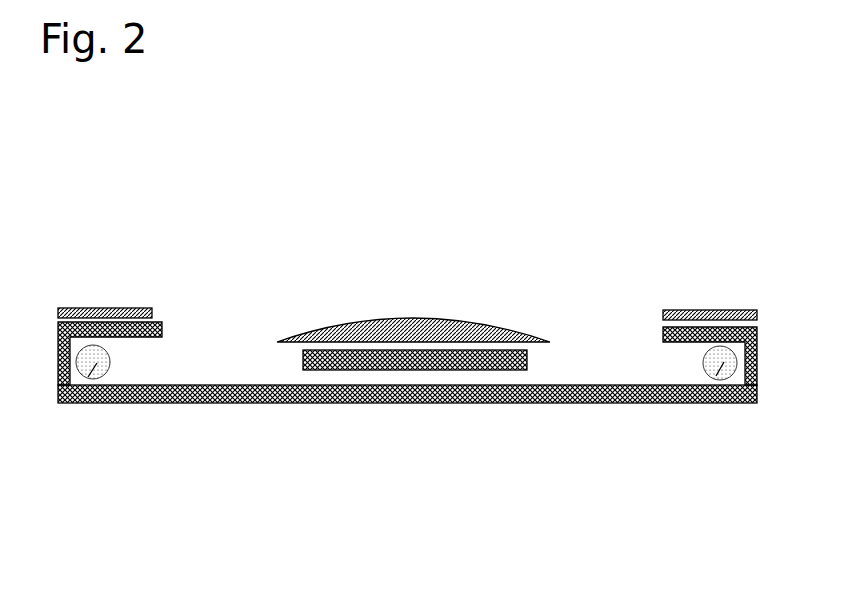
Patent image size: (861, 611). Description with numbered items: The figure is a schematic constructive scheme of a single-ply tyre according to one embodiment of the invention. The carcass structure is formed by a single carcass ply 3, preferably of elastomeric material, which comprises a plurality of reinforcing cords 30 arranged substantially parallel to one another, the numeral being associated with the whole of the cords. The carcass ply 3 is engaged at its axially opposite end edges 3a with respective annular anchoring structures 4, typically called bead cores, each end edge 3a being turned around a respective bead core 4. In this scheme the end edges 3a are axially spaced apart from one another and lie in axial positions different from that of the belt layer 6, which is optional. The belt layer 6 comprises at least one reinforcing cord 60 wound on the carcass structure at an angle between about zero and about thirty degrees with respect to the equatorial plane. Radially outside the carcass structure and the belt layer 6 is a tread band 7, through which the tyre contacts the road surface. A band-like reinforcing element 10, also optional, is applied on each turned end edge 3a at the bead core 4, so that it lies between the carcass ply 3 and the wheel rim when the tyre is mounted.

The carcass ply 3 is at (230, 404).
The end edge 3a is at (161, 318).
The annular anchoring structure 4 is at (78, 404).
The belt layer 6 is at (530, 360).
The tread band 7 is at (370, 322).
The band-like reinforcing element 10 is at (107, 309).
The reinforcing cords 30 is at (430, 404).
The reinforcing cord 60 is at (322, 360).